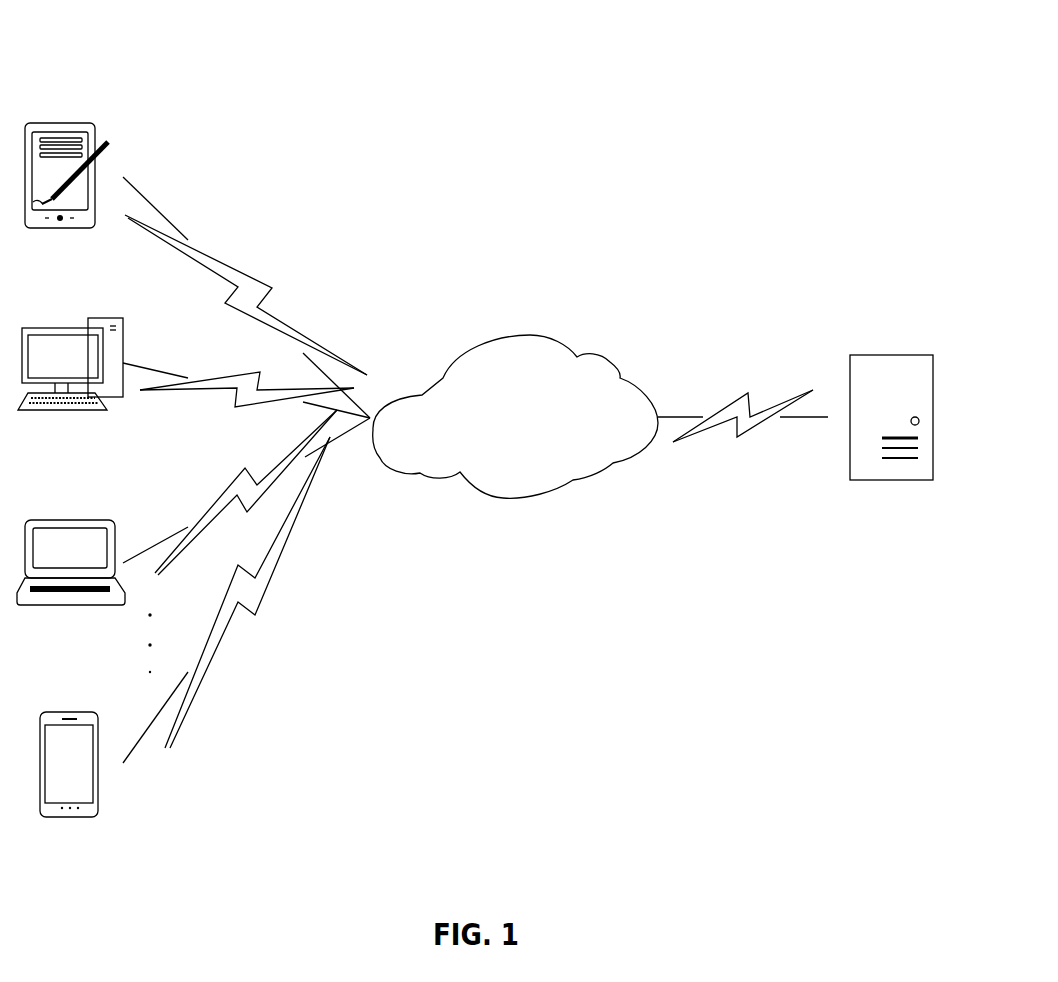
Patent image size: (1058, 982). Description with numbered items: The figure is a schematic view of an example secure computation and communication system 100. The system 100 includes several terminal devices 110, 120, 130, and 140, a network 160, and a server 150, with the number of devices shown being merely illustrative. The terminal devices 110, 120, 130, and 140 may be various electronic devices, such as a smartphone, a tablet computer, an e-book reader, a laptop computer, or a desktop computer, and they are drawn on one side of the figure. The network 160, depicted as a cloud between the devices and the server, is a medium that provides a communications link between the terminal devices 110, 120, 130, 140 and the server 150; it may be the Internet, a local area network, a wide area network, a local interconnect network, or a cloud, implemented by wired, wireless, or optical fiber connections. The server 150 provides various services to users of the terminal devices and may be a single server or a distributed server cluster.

The secure computation and communication system 100 is at (551, 87).
The terminal device 110 is at (93, 127).
The terminal device 120 is at (53, 328).
The terminal device 130 is at (60, 518).
The terminal device 140 is at (67, 708).
The server 150 is at (897, 353).
The network 160 is at (535, 335).